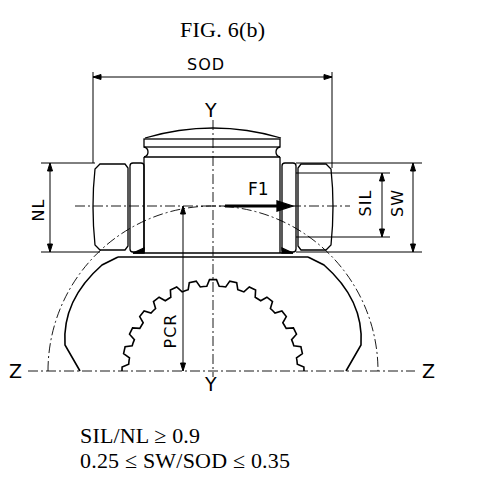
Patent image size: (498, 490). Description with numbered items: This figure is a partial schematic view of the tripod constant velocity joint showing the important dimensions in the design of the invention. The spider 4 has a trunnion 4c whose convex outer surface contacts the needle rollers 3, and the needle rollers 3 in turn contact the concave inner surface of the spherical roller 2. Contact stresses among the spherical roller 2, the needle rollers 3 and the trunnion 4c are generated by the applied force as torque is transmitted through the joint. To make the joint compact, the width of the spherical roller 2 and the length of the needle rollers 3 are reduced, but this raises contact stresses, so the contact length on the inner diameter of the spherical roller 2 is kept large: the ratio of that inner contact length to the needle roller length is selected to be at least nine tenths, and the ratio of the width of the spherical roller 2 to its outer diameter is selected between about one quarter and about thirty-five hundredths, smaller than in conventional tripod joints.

The spherical roller 2 is at (115, 186).
The needle rollers 3 is at (297, 176).
The spider 4 is at (251, 172).
The trunnion 4c is at (175, 175).